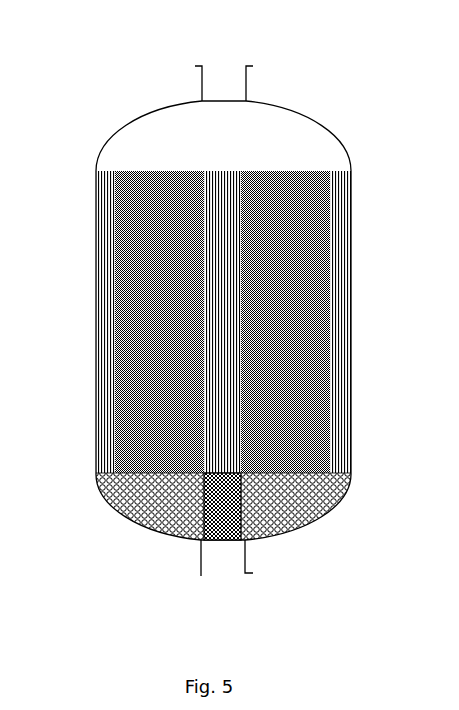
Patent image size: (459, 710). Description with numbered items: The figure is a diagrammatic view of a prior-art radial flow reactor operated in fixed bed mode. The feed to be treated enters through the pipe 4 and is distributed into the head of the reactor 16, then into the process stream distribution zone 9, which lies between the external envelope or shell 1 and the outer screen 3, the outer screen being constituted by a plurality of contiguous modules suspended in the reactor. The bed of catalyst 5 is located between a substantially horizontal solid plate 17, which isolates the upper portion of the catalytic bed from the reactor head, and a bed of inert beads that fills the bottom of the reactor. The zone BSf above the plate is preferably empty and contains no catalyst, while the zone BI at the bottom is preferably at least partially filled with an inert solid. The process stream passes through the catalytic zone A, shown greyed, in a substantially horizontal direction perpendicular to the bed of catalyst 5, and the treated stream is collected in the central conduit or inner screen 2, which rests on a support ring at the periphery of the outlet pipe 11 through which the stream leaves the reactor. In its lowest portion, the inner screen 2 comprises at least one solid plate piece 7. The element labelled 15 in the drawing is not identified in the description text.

The external envelope or shell 1 is at (87, 175).
The inner screen 2 is at (225, 380).
The outer screen 3 is at (107, 283).
The pipe 4 is at (217, 65).
The bed of catalyst 5 is at (130, 338).
The solid plate piece 7 is at (213, 513).
The process stream distribution zone 9 is at (332, 362).
The outlet pipe 11 is at (213, 553).
The bottom support bed 15 is at (258, 502).
The head of the reactor 16 is at (213, 135).
The solid plate 17 is at (175, 163).
The zone BSf is at (298, 145).
The catalytic zone A is at (172, 450).
The zone BI is at (127, 482).